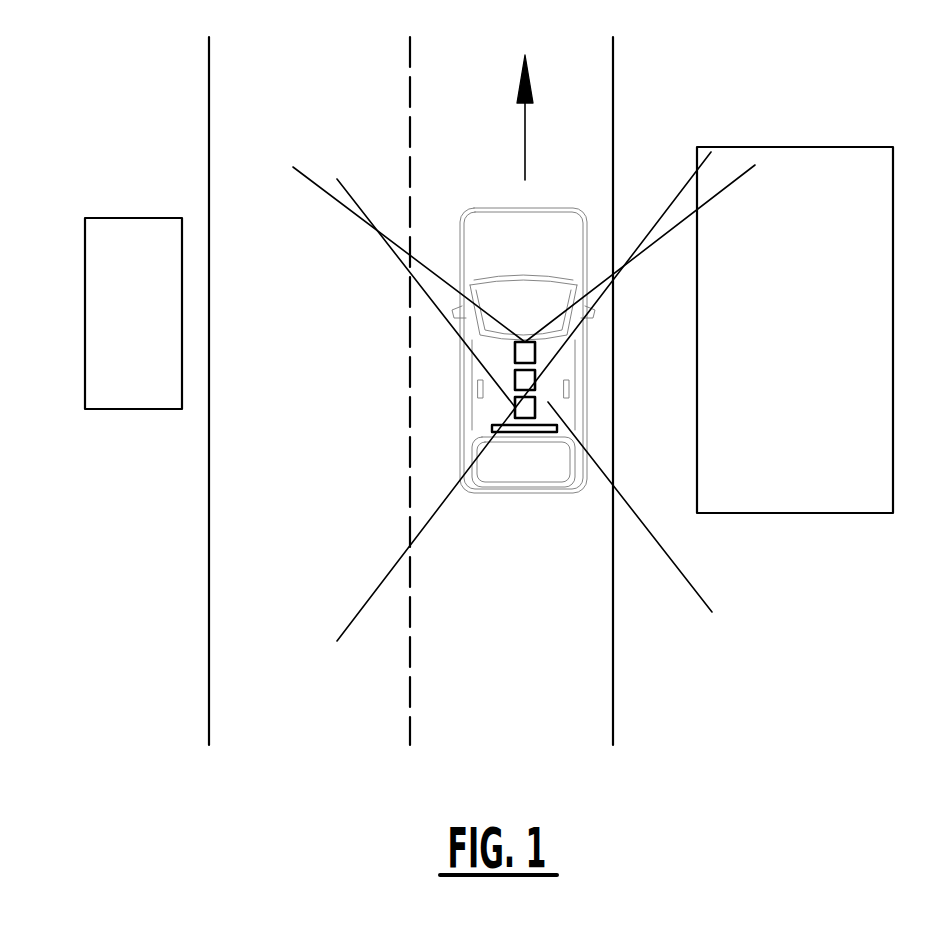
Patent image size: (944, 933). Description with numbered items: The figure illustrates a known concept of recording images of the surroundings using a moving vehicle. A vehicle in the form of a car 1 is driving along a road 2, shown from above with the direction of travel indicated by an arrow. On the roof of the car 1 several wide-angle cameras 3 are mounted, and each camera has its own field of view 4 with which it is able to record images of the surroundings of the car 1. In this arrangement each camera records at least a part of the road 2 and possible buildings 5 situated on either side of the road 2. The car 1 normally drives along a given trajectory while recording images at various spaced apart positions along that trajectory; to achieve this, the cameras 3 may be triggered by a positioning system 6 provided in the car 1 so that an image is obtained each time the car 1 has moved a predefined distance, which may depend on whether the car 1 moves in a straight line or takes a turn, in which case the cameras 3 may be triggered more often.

The car 1 is at (485, 477).
The road 2 is at (587, 97).
The wide-angle cameras 3 is at (518, 382).
The field of view 4 is at (680, 568).
The buildings 5 is at (105, 342).
The positioning system 6 is at (526, 436).